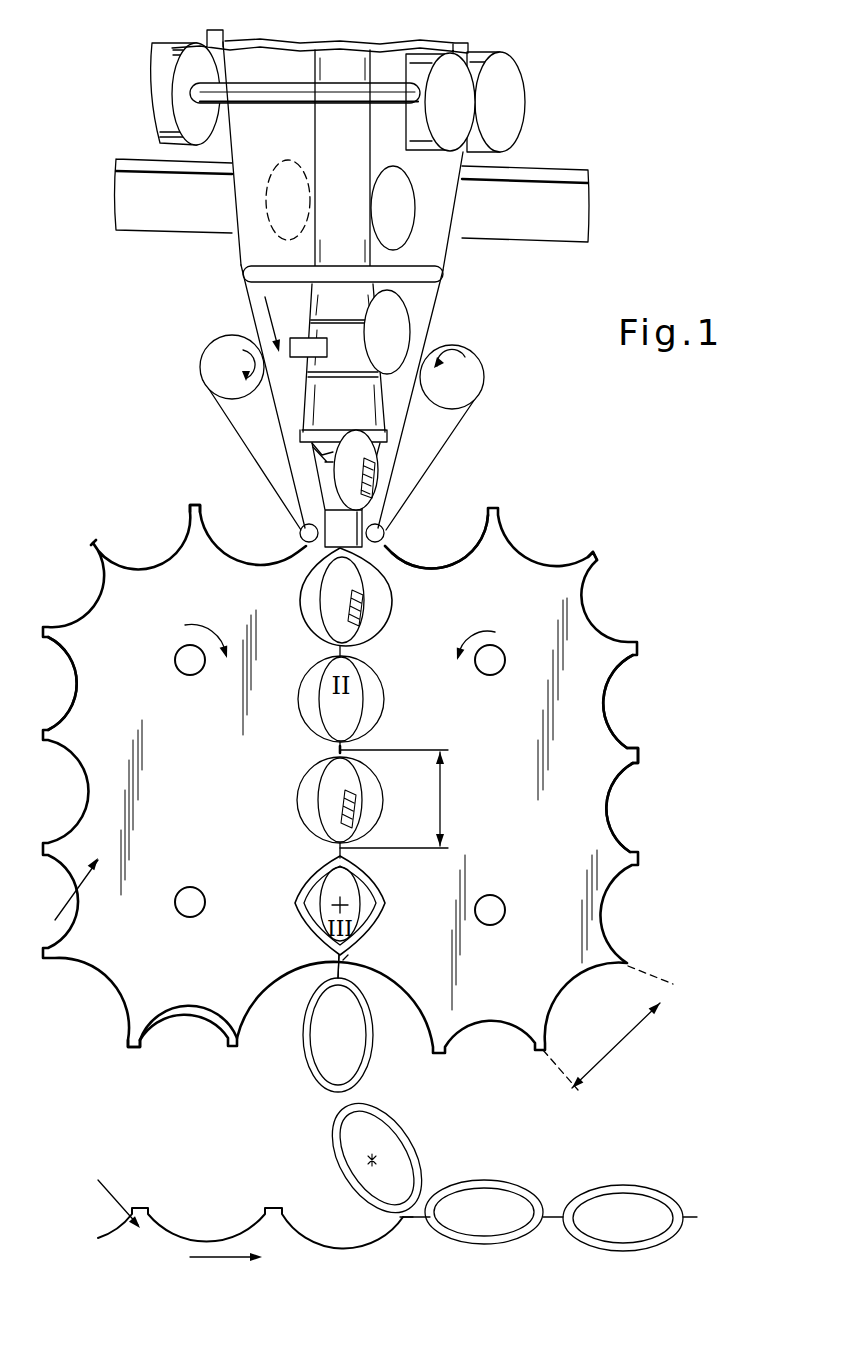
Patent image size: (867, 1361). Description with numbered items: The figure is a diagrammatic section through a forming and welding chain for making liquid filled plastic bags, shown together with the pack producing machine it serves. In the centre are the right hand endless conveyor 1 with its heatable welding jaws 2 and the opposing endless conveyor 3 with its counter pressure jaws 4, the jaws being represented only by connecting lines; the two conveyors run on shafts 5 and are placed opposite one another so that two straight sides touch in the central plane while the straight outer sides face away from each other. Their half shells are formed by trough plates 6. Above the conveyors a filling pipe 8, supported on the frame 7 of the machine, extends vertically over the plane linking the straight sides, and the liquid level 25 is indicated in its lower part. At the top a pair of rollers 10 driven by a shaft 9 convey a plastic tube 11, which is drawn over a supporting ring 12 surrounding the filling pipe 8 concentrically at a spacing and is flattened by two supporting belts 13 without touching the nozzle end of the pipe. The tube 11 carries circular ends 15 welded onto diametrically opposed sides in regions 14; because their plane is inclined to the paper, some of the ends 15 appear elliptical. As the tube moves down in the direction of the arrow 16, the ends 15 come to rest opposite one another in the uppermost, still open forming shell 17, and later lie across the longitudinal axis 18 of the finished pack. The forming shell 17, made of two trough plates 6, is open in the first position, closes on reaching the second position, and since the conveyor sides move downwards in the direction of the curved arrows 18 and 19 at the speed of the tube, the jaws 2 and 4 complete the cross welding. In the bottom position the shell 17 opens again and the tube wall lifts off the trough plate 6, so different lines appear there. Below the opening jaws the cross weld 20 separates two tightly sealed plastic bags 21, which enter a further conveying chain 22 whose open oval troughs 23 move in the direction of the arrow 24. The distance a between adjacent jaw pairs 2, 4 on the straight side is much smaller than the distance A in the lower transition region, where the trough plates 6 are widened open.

The endless conveyor 1 is at (575, 665).
The heatable welding jaws 2 is at (595, 556).
The opposing endless conveyor 3 is at (66, 903).
The counter pressure jaws 4 is at (93, 543).
The shafts 5 is at (177, 656).
The trough plates 6 is at (523, 553).
The frame 7 is at (552, 228).
The filling pipe 8 is at (336, 413).
The shaft 9 is at (196, 90).
The pair of rollers 10 is at (463, 117).
The plastic tube 11 is at (239, 242).
The supporting ring 12 is at (246, 277).
The supporting belts 13 is at (237, 442).
The regions 14 is at (380, 472).
The circular ends 15 is at (387, 210).
The arrow 16 is at (270, 313).
The forming shell 17 is at (300, 598).
The longitudinal axis / curved arrow 18 is at (495, 632).
The curved arrow 19 is at (202, 623).
The cross weld 20 is at (343, 958).
The plastic bags 21 is at (332, 1123).
The further conveying chain 22 is at (105, 1192).
The oval troughs 23 is at (327, 1250).
The arrow 24 is at (217, 1258).
The liquid level 25 is at (320, 455).
The distance a is at (440, 800).
The distance A is at (604, 1038).